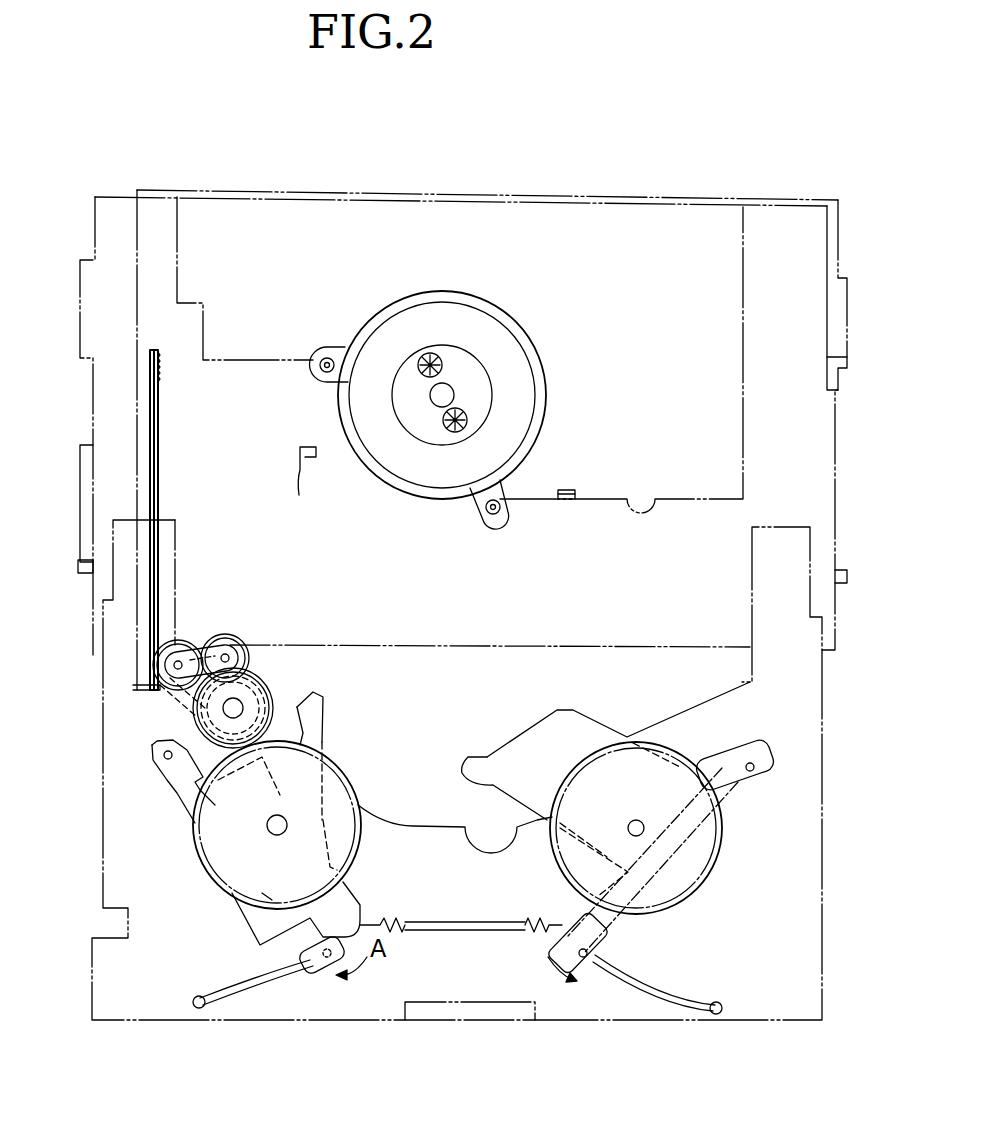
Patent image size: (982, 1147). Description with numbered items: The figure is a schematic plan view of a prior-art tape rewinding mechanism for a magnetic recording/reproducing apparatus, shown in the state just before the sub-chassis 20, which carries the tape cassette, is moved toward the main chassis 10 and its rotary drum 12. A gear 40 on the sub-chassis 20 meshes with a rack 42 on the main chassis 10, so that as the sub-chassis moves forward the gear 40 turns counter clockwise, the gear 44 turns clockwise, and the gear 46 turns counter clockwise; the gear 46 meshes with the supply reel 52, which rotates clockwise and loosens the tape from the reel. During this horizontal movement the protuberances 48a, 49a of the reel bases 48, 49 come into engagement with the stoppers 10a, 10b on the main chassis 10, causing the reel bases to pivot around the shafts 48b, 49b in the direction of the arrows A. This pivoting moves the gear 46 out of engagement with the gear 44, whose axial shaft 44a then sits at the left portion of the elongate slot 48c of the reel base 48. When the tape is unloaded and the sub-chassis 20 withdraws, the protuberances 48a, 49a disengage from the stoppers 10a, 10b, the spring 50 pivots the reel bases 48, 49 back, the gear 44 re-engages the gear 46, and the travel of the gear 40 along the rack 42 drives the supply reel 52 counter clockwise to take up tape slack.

The main chassis 10 is at (634, 199).
The stopper 10a is at (302, 490).
The stopper 10b is at (566, 488).
The rotary drum 12 is at (458, 300).
The sub-chassis 20 is at (618, 1021).
The gear 40 is at (178, 640).
The rack 42 is at (138, 348).
The gear 44 is at (238, 640).
The axial shaft 44a is at (245, 648).
The gear 46 is at (262, 690).
The reel base 48 is at (245, 917).
The protuberance 48a is at (310, 707).
The shaft 48b is at (166, 757).
The elongate slot 48c is at (165, 692).
The reel base 49 is at (630, 930).
The protuberance 49a is at (573, 712).
The shaft 49b is at (752, 770).
The spring 50 is at (443, 934).
The supply reel 52 is at (310, 918).